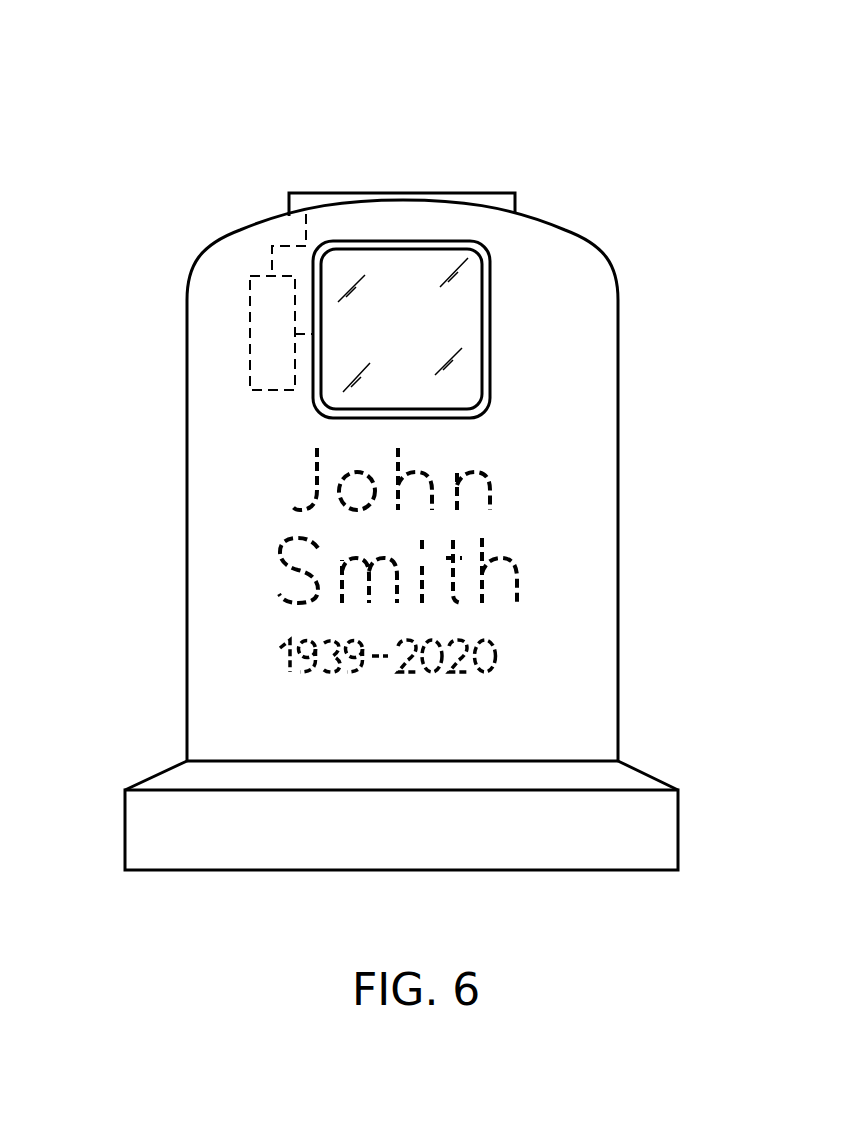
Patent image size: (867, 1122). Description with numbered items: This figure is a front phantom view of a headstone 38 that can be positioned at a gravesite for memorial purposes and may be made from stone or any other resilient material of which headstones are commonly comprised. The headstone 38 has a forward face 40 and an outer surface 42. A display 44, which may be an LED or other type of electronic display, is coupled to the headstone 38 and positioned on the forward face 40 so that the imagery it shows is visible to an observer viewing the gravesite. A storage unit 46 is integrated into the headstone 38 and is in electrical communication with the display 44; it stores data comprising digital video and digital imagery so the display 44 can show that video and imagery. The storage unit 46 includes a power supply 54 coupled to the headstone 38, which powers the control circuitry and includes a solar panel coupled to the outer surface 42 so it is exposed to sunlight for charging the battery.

The headstone 38 is at (195, 267).
The forward face 40 is at (568, 471).
The outer surface 42 is at (600, 250).
The display 44 is at (488, 254).
The storage unit 46 is at (250, 338).
The power supply 54 is at (352, 145).